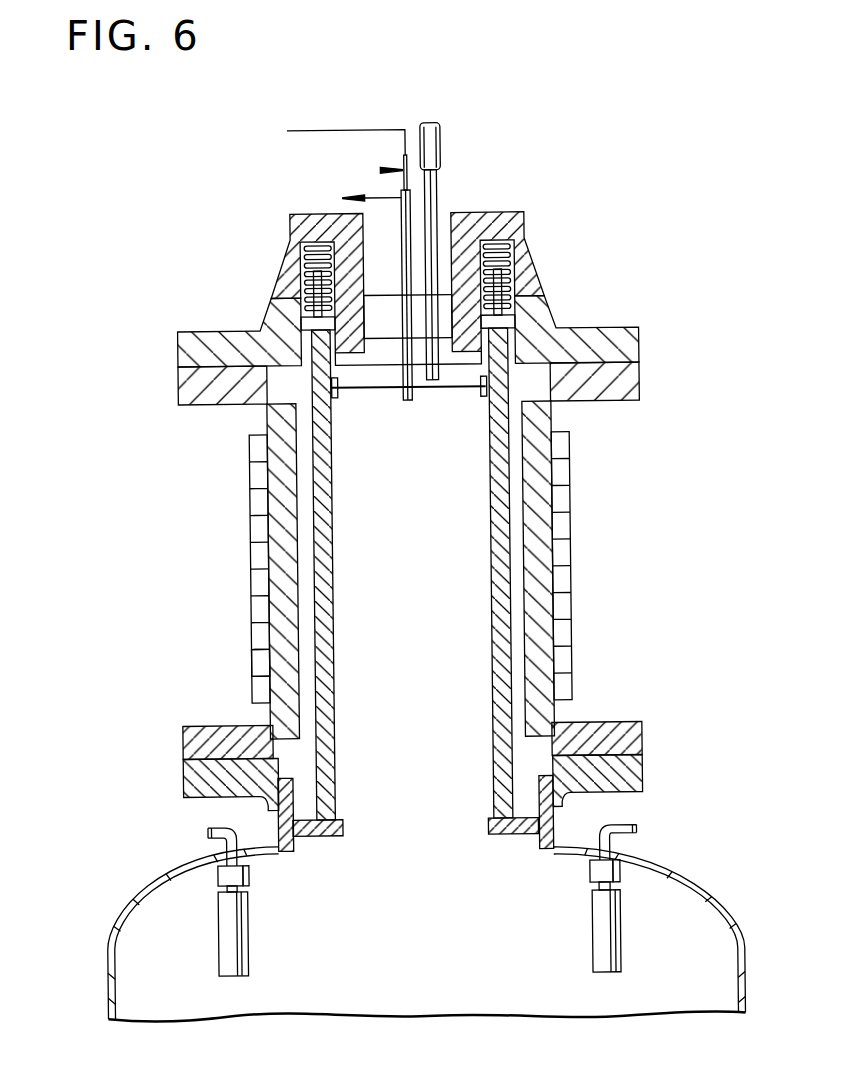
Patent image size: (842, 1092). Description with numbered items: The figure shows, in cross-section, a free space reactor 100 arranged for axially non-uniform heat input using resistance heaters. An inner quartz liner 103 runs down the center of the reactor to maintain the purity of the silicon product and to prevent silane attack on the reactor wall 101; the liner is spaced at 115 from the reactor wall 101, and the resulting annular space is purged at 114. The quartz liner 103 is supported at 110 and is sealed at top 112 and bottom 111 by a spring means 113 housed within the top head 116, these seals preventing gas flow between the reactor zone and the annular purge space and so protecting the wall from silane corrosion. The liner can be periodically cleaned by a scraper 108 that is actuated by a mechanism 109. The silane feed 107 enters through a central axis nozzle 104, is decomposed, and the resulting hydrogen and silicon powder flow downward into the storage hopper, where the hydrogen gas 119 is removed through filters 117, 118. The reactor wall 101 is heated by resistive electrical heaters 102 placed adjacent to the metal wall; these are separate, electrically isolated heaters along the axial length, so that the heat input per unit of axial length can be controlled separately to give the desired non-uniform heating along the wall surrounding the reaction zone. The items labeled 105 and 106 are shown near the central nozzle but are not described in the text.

The free space reactor 100 is at (240, 499).
The reactor wall 101 is at (280, 554).
The resistive electrical heaters 102 is at (261, 667).
The inner quartz liner 103 is at (336, 593).
The central axis nozzle 104 is at (412, 400).
The thermocouple lead 105 is at (385, 170).
The thermocouple probe 106 is at (347, 198).
The silane feed 107 is at (357, 130).
The scraper 108 is at (372, 389).
The mechanism 109 is at (441, 186).
The quartz liner support 110 is at (325, 836).
The bottom seal 111 is at (341, 819).
The top seal 112 is at (408, 329).
The spring means 113 is at (311, 253).
The annular space purge 114 is at (286, 297).
The spacing between quartz liner and reactor wall 115 is at (302, 434).
The top head 116 is at (180, 354).
The filter 117 is at (589, 933).
The filter 118 is at (222, 932).
The hydrogen gas 119 is at (206, 830).